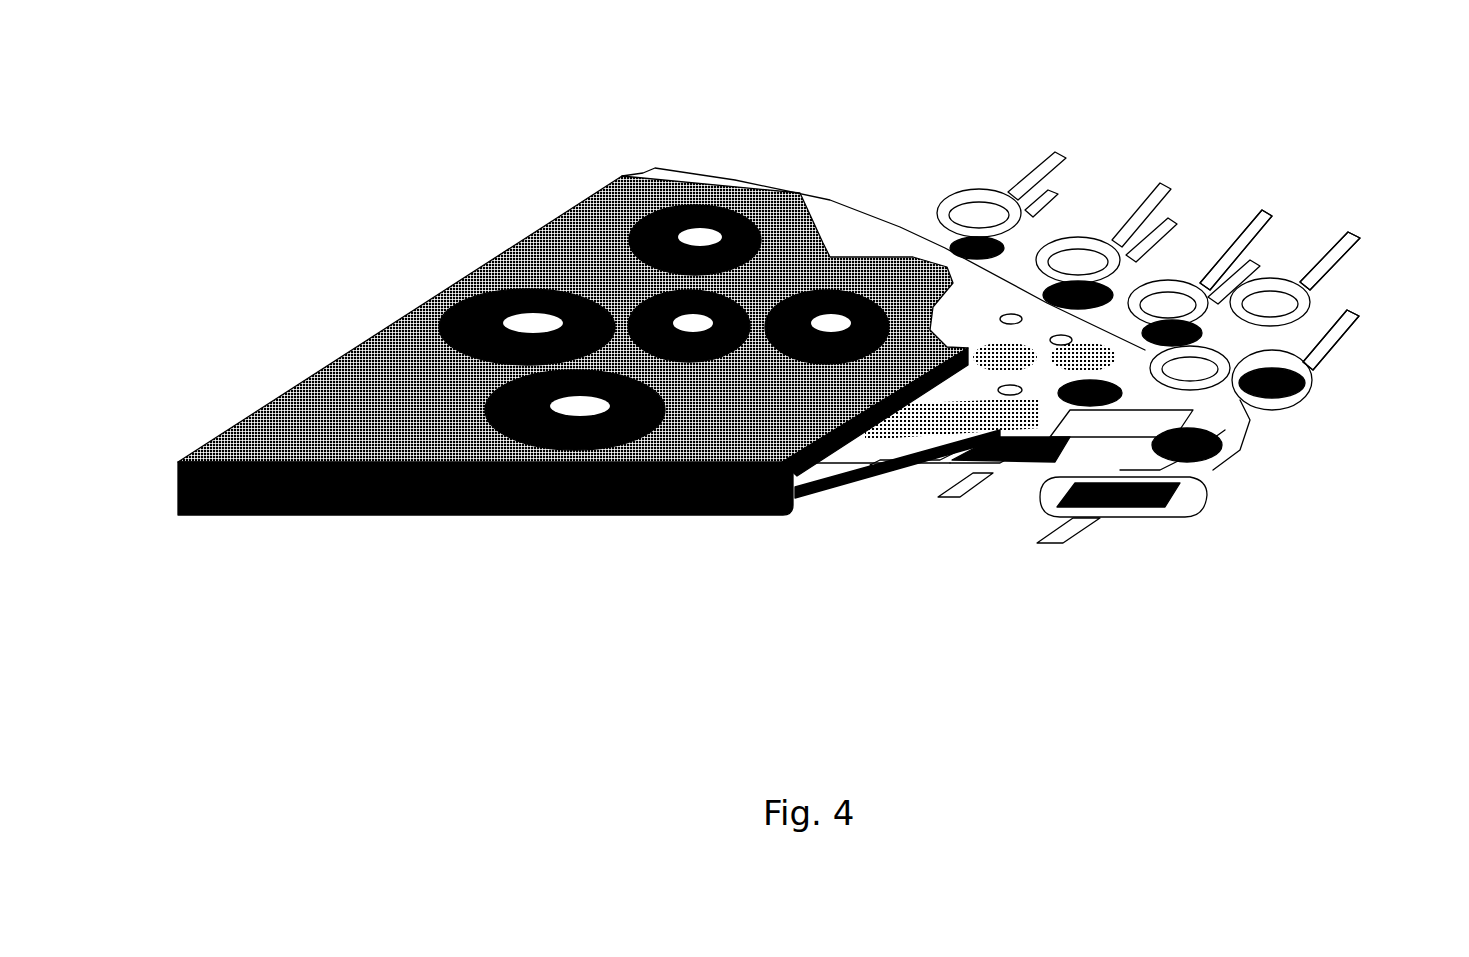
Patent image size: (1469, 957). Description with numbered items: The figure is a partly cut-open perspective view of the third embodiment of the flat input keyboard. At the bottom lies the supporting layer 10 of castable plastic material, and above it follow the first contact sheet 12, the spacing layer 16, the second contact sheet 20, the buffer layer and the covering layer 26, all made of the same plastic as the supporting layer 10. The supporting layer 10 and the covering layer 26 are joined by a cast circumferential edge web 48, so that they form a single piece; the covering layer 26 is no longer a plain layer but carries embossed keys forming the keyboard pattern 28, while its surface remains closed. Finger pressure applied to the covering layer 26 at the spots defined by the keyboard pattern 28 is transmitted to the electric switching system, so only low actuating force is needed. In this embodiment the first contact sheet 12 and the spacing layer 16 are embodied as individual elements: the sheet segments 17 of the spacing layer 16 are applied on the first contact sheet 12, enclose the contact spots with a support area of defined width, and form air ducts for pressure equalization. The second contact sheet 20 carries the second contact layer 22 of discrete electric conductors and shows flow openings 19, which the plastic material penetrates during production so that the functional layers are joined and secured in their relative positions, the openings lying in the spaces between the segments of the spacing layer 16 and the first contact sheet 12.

The supporting layer 10 is at (811, 508).
The first contact sheet 12 is at (1200, 470).
The spacing layer 16 is at (1251, 235).
The sheet segments 17 is at (1353, 258).
The flow openings 19 is at (1007, 372).
The second contact sheet 20 is at (862, 230).
The second contact layer 22 is at (1284, 388).
The covering layer 26 is at (562, 233).
The keyboard pattern 28 is at (482, 389).
The circumferential edge web 48 is at (311, 491).